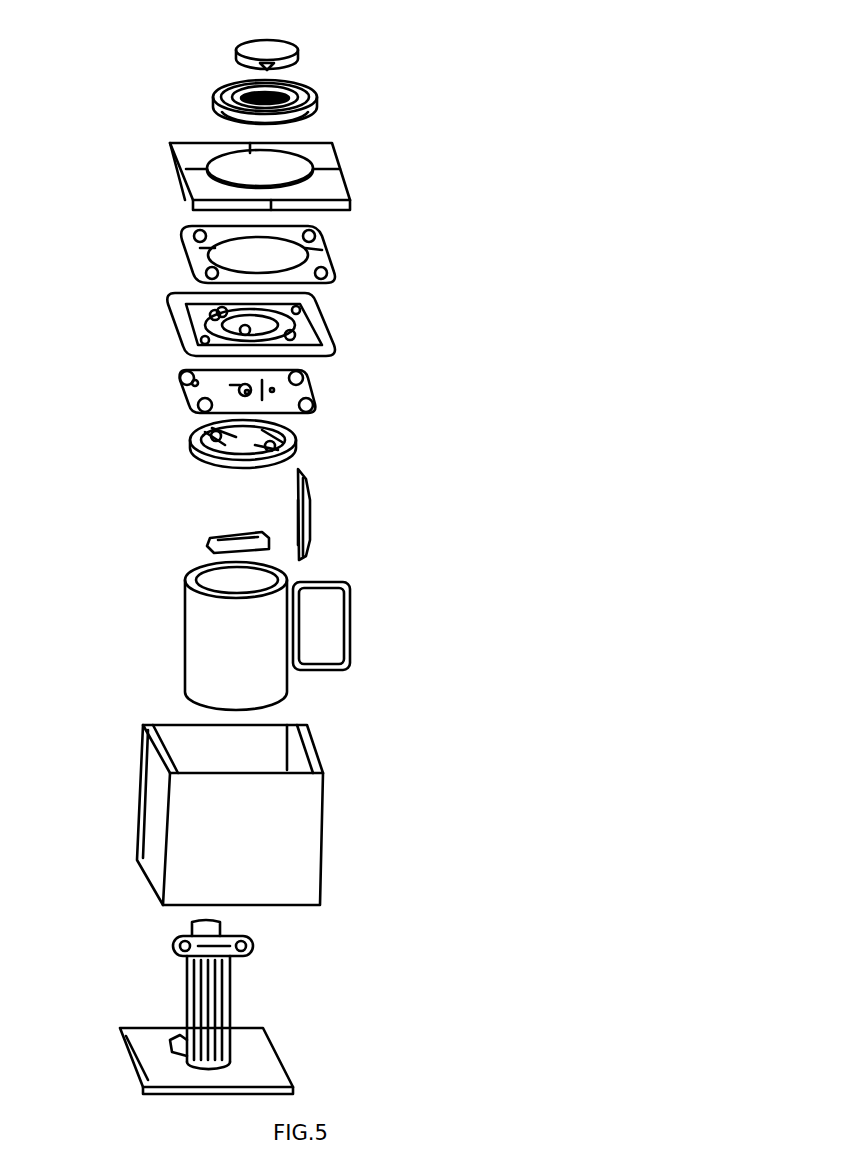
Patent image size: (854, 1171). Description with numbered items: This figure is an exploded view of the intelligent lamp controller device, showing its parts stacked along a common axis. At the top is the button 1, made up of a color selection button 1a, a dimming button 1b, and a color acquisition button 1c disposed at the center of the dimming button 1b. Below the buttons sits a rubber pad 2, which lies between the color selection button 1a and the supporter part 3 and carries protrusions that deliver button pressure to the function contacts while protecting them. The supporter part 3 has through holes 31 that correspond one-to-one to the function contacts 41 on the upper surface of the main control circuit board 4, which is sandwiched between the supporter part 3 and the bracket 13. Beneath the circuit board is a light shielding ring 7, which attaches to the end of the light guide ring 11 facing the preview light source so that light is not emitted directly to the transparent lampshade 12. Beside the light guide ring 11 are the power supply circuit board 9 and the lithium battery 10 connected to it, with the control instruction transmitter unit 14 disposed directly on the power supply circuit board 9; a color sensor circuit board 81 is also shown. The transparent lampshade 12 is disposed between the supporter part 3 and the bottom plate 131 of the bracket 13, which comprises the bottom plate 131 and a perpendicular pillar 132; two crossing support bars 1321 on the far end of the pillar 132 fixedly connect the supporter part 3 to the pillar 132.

The button 1 is at (487, 15).
The color selection button 1a is at (316, 160).
The dimming button 1b is at (296, 84).
The color acquisition button 1c is at (297, 52).
The rubber pad 2 is at (325, 258).
The supporter part 3 is at (302, 322).
The through hole 31 is at (187, 330).
The main control circuit board 4 is at (300, 390).
The function contact 41 is at (247, 390).
The light shielding ring 7 is at (283, 456).
The control instruction transmitter unit 14 is at (313, 497).
The power supply circuit board 9 is at (313, 537).
The color sensor circuit board 81 is at (205, 535).
The lithium battery 10 is at (323, 620).
The light guide ring 11 is at (253, 660).
The transparent lampshade 12 is at (263, 838).
The bracket 13 is at (448, 975).
The bottom plate 131 is at (250, 1058).
The pillar 132 is at (212, 1000).
The support bar 1321 is at (253, 948).